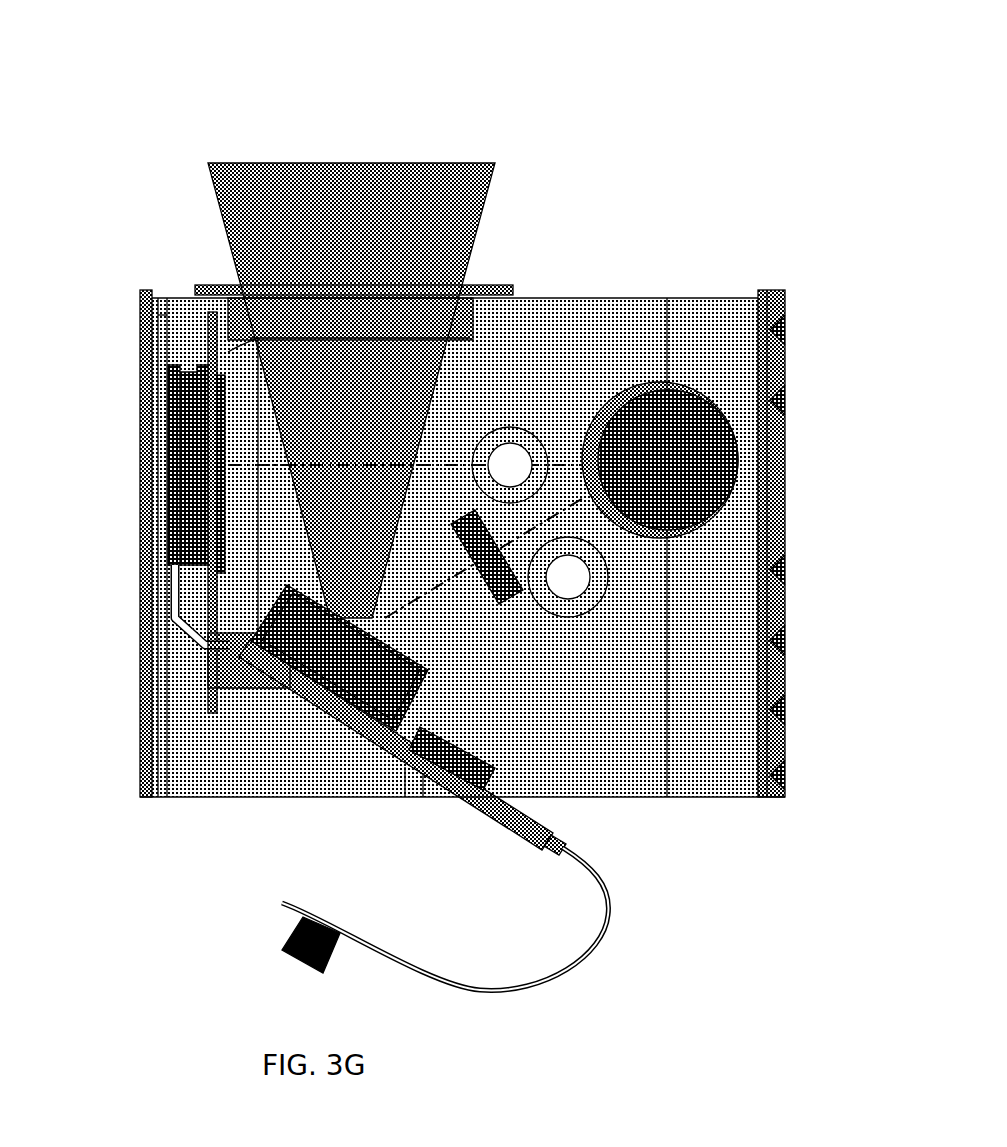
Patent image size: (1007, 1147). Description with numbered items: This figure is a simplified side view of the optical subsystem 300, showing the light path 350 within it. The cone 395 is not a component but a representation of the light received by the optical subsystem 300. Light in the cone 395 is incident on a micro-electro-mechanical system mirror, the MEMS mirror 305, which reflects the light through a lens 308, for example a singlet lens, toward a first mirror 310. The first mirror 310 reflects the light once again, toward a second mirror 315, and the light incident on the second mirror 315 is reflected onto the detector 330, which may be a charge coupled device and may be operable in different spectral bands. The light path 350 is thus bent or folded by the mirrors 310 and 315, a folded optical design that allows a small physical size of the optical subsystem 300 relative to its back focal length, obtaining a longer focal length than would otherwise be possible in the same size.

The optical subsystem 300 is at (517, 26).
The cone 395 is at (217, 210).
The detector 330 is at (223, 448).
The MEMS mirror 305 is at (303, 677).
The light path 350 is at (475, 453).
The lens 308 is at (515, 583).
The first mirror 310 is at (588, 388).
The second mirror 315 is at (713, 495).